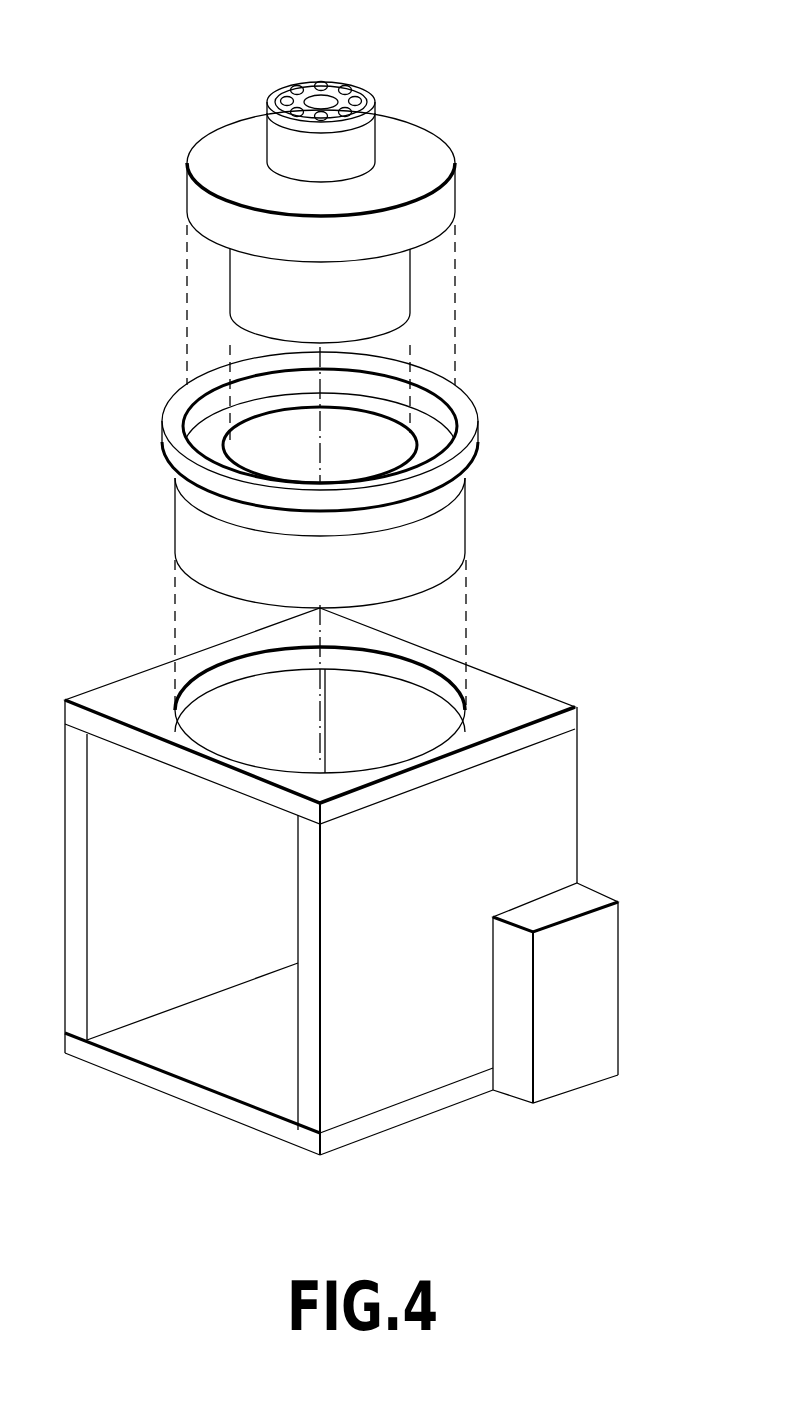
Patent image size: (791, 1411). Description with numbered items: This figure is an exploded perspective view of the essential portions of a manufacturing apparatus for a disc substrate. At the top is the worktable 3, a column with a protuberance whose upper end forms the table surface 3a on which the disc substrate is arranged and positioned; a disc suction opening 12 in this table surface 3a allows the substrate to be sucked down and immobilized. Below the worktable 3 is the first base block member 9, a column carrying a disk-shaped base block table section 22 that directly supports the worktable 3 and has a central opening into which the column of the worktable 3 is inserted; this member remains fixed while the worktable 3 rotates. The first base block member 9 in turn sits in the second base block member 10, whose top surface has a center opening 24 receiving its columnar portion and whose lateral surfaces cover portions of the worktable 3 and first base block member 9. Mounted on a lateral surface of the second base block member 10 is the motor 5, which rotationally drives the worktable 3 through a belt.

The worktable 3 is at (485, 195).
The table surface 3a is at (362, 98).
The disc suction opening 12 is at (347, 87).
The base block table section 22 is at (453, 520).
The first base block member 9 is at (373, 753).
The center opening 24 is at (443, 680).
The second base block member 10 is at (542, 808).
The motor 5 is at (582, 897).